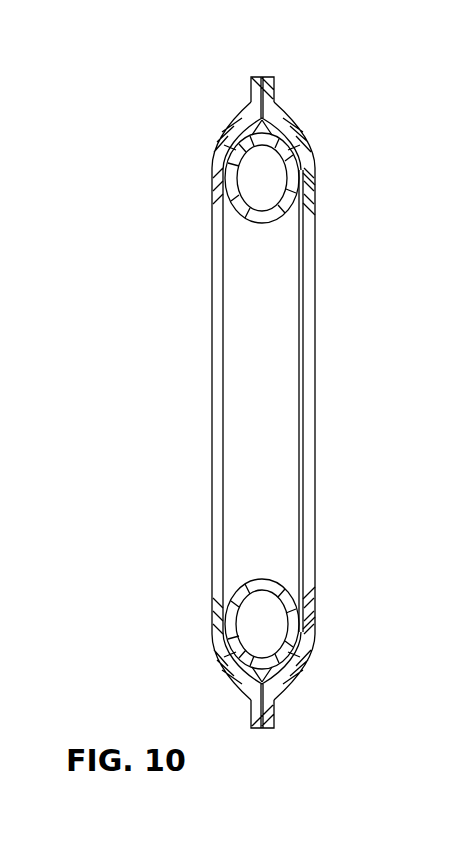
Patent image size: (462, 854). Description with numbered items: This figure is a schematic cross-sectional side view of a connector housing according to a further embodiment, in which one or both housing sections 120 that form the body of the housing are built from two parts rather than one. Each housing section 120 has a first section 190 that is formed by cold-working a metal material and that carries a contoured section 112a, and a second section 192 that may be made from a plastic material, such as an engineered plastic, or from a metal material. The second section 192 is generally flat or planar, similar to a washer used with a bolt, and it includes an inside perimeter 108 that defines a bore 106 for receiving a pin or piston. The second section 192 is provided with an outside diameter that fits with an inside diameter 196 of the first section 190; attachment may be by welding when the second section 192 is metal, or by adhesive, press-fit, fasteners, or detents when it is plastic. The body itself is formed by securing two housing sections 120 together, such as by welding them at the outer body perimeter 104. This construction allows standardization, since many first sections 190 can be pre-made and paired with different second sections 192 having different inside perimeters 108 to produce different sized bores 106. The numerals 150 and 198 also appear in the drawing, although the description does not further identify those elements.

The outer body perimeter 104 is at (276, 731).
The bore 106 is at (255, 408).
The inside perimeter 108 is at (216, 229).
The contoured section 112a is at (215, 158).
The housing section 120 is at (219, 119).
The opening 150 is at (271, 224).
The first section 190 is at (312, 131).
The second section 192 is at (318, 192).
The inside diameter 196 is at (211, 631).
The lower opening ring 198 is at (215, 646).